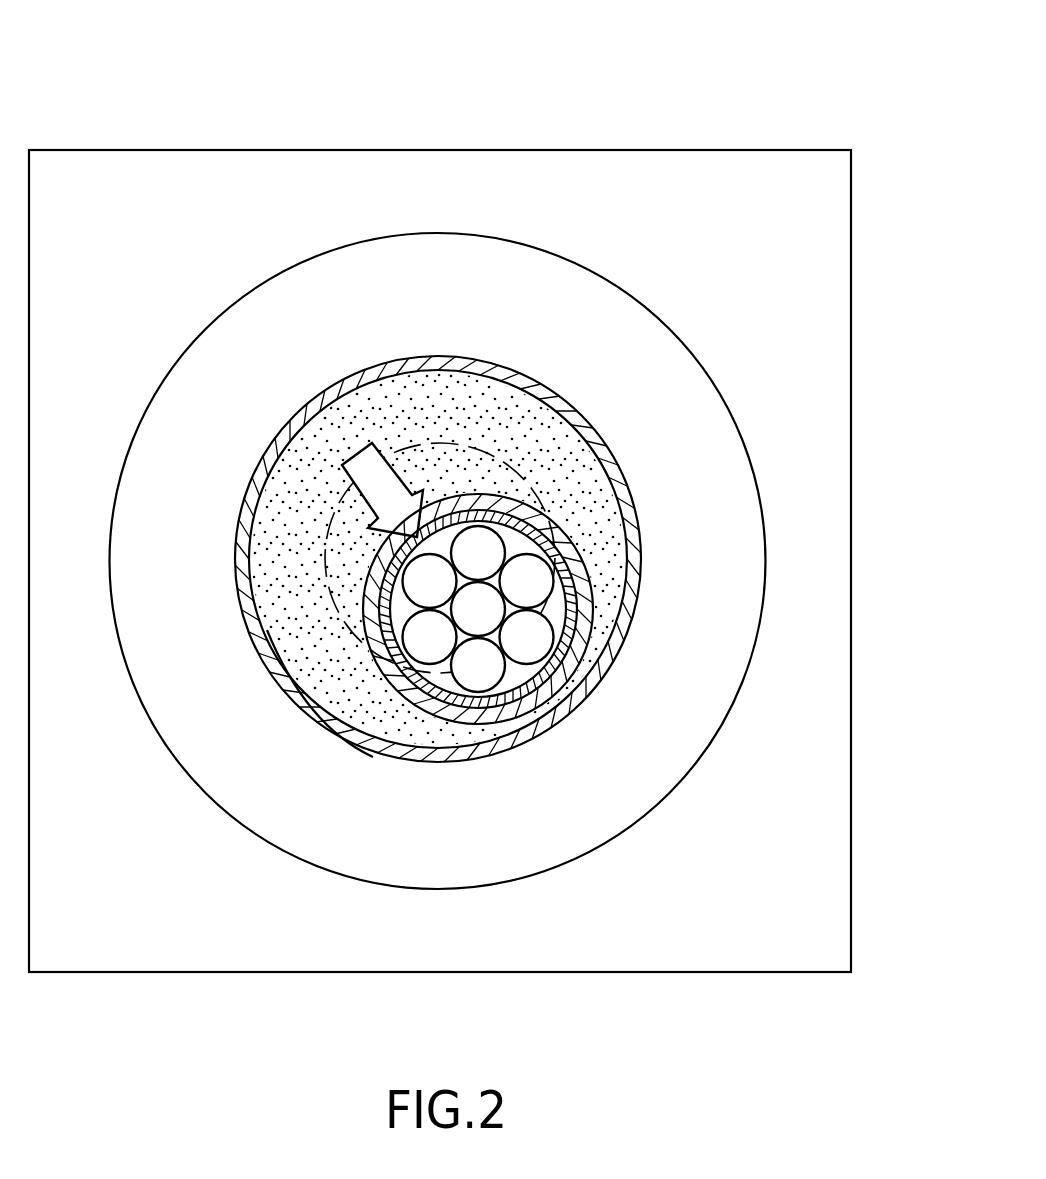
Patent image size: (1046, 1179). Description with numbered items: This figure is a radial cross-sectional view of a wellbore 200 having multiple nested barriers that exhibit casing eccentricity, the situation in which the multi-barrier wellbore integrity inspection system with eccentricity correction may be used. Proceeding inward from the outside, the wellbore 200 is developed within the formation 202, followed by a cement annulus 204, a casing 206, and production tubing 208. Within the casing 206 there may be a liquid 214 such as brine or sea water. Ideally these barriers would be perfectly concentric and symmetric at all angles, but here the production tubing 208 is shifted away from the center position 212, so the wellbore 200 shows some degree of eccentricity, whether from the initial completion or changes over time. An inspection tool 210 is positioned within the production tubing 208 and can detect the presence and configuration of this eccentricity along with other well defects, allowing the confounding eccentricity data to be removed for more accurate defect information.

The wellbore 200 is at (790, 70).
The formation 202 is at (815, 293).
The cement annulus 204 is at (722, 522).
The casing 206 is at (622, 623).
The production tubing 208 is at (570, 655).
The inspection tool 210 is at (517, 680).
The center position 212 is at (493, 455).
The liquid 214 is at (273, 617).